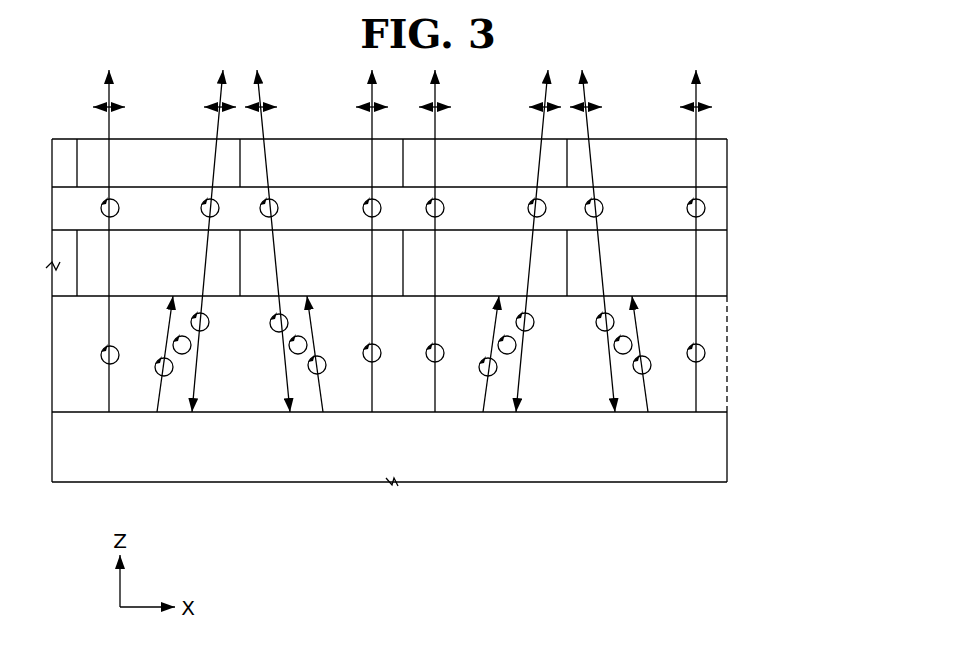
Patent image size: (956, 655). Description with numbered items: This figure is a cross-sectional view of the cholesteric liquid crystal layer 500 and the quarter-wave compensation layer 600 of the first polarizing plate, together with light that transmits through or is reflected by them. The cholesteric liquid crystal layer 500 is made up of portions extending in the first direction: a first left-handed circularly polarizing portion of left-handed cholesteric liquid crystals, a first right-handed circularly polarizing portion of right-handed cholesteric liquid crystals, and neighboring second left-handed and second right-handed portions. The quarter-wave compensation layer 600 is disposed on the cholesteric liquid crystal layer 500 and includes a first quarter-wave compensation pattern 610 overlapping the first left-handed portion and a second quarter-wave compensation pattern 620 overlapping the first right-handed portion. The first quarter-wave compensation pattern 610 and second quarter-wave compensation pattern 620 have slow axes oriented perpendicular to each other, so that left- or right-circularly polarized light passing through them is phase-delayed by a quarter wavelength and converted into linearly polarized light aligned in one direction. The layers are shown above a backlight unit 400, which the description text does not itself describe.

The λ/4 compensation layer 600 is at (435, 152).
The first λ/4 compensation pattern 610 is at (162, 139).
The second λ/4 compensation pattern 620 is at (314, 139).
The cholesteric liquid crystal layer 500 is at (732, 253).
The backlight unit 400 is at (732, 447).